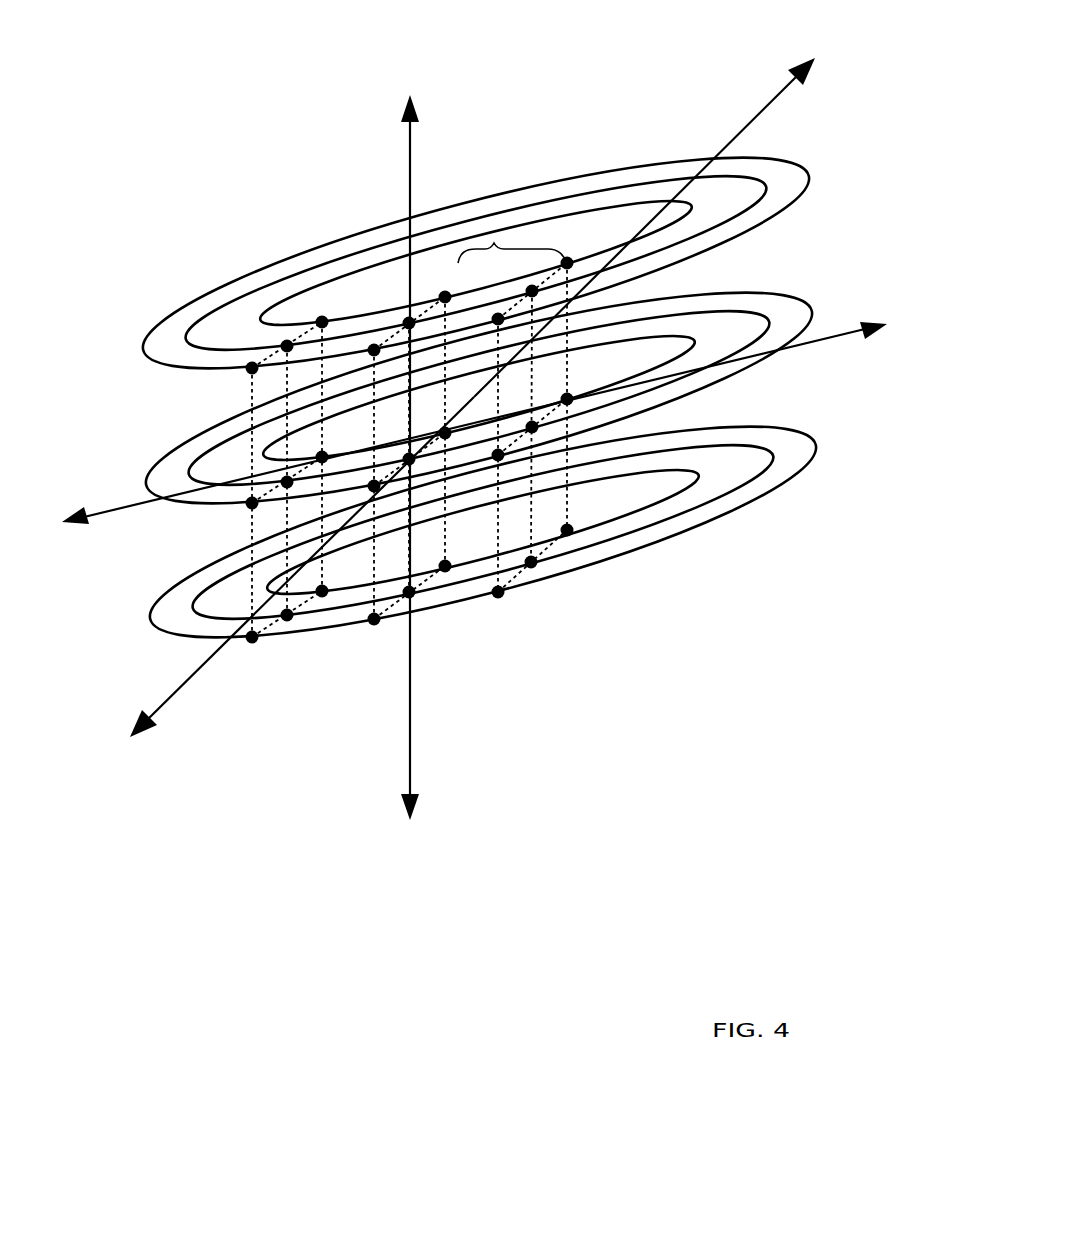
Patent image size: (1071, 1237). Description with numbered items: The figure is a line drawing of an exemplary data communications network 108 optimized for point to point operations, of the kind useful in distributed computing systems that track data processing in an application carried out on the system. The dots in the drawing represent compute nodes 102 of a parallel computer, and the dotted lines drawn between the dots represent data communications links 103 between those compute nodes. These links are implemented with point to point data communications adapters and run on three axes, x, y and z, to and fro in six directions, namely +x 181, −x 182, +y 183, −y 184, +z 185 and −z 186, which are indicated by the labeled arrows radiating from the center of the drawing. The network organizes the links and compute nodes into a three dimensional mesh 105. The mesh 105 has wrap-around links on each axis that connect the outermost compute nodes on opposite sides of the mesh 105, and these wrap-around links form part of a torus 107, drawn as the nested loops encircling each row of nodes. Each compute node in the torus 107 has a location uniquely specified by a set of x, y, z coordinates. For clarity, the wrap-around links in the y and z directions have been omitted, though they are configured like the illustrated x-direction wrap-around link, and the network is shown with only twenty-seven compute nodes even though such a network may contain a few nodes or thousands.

The compute nodes 102 is at (567, 530).
The data communications links 103 is at (252, 396).
The three dimensional mesh 105 is at (506, 240).
The torus 107 is at (230, 265).
The data communications network 108 is at (304, 891).
The +x direction 181 is at (924, 357).
The −x direction 182 is at (59, 565).
The +y direction 183 is at (861, 88).
The −y direction 184 is at (128, 790).
The +z direction 185 is at (428, 88).
The −z direction 186 is at (431, 885).